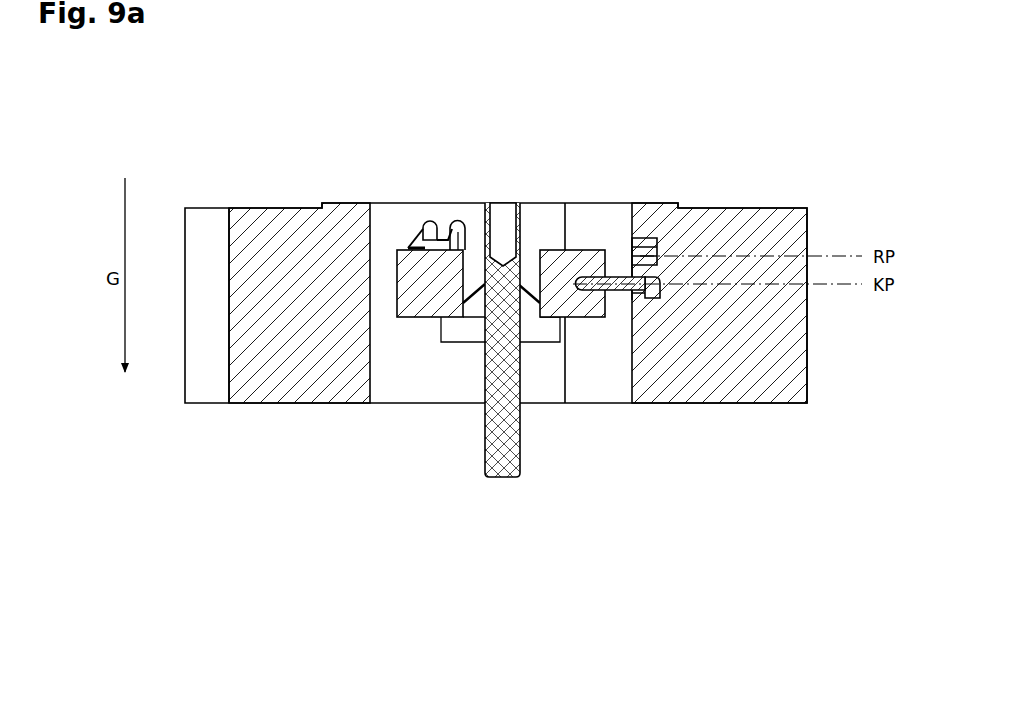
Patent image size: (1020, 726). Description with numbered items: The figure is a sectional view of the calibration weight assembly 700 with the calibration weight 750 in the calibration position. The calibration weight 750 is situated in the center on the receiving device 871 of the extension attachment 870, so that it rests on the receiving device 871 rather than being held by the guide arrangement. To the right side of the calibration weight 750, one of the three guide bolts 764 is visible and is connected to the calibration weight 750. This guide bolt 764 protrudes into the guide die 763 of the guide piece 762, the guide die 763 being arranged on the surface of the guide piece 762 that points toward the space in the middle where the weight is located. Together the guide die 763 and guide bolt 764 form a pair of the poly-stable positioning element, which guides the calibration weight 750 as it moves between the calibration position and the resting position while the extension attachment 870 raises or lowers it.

The plug connector arrangement 700 is at (185, 472).
The calibration weight 750 is at (586, 266).
The guide piece 762 is at (291, 262).
The guide die 763 is at (410, 217).
The guide bolt 764 is at (617, 295).
The extension attachment 870 is at (500, 442).
The receiving device 871 is at (467, 325).